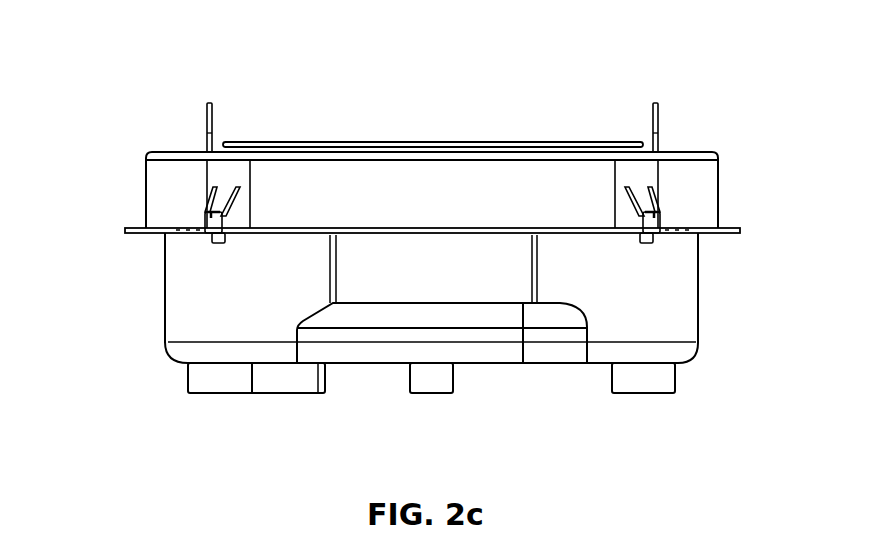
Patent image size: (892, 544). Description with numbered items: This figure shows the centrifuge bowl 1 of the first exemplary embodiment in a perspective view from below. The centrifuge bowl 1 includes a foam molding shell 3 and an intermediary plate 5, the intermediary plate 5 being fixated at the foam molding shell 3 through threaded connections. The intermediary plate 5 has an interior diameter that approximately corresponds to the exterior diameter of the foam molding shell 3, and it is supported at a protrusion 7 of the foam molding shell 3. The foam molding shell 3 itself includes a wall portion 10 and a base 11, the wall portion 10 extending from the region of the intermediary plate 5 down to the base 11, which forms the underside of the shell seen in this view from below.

The centrifuge bowl 1 is at (150, 88).
The foam molding shell 3 is at (648, 298).
The intermediary plate 5 is at (133, 229).
The protrusion 7 is at (163, 228).
The wall portion 10 is at (155, 287).
The base 11 is at (563, 378).